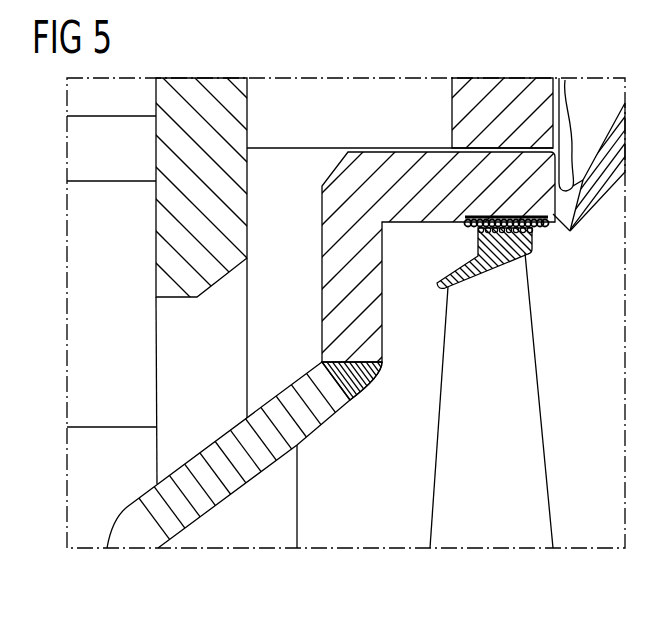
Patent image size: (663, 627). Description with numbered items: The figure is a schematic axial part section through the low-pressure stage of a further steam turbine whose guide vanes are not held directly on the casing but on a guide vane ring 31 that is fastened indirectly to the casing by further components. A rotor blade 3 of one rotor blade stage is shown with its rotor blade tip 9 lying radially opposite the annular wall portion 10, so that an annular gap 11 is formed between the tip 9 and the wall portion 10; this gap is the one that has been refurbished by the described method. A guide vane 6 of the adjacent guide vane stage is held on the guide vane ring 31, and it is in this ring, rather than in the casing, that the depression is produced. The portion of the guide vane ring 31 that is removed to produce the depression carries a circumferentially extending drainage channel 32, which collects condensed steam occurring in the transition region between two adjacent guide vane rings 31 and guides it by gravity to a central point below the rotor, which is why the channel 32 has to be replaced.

The rotor blade 3 is at (483, 532).
The guide vane 6 is at (238, 530).
The rotor blade tip 9 is at (493, 248).
The annular wall portion 10 is at (453, 215).
The annular gap 11 is at (537, 228).
The guide vane ring 31 is at (388, 180).
The drainage channel 32 is at (565, 80).